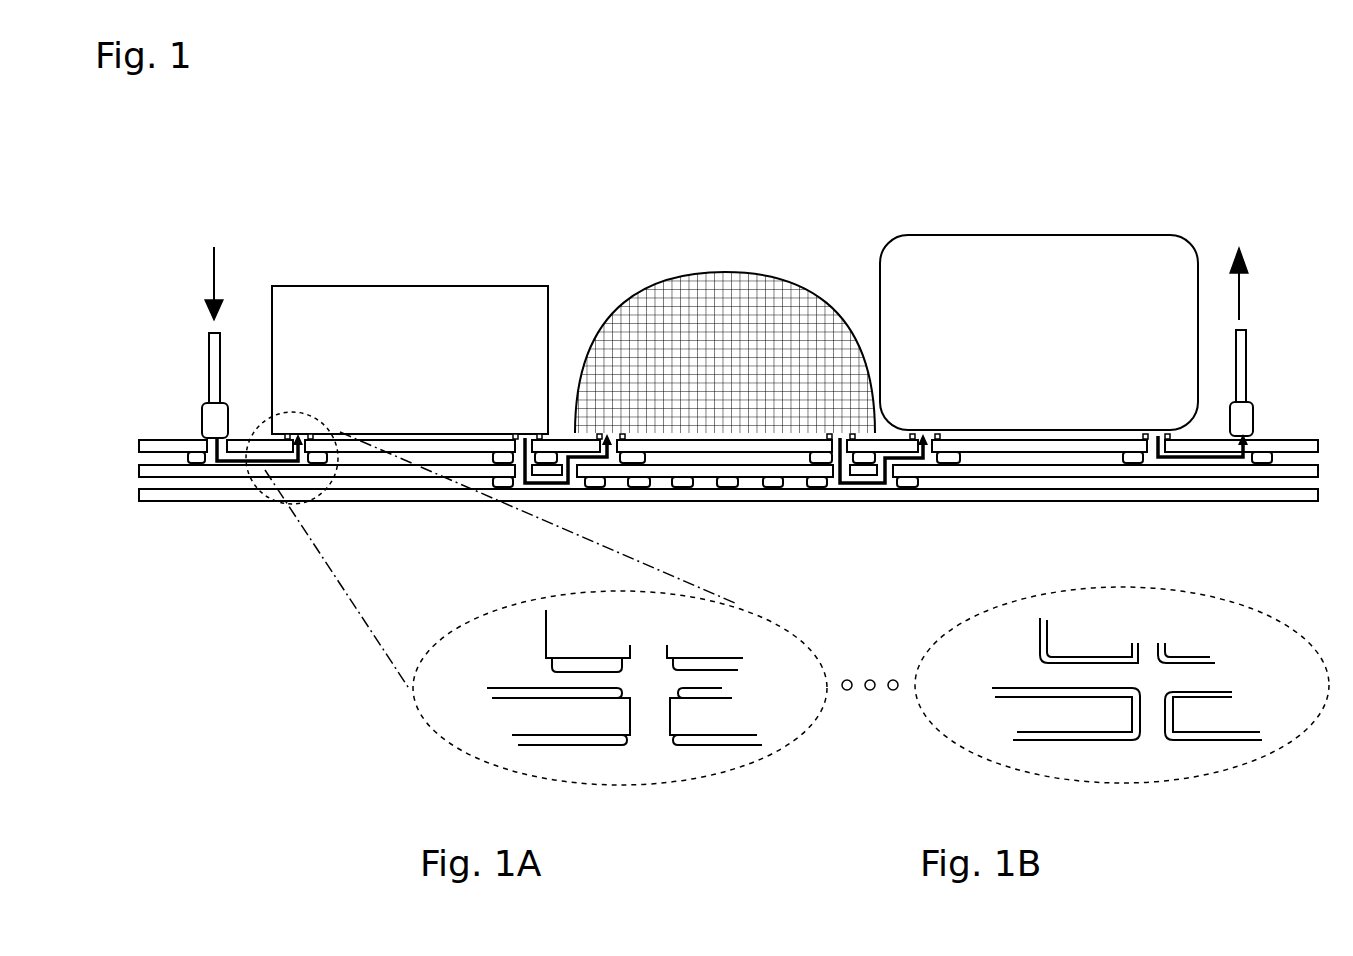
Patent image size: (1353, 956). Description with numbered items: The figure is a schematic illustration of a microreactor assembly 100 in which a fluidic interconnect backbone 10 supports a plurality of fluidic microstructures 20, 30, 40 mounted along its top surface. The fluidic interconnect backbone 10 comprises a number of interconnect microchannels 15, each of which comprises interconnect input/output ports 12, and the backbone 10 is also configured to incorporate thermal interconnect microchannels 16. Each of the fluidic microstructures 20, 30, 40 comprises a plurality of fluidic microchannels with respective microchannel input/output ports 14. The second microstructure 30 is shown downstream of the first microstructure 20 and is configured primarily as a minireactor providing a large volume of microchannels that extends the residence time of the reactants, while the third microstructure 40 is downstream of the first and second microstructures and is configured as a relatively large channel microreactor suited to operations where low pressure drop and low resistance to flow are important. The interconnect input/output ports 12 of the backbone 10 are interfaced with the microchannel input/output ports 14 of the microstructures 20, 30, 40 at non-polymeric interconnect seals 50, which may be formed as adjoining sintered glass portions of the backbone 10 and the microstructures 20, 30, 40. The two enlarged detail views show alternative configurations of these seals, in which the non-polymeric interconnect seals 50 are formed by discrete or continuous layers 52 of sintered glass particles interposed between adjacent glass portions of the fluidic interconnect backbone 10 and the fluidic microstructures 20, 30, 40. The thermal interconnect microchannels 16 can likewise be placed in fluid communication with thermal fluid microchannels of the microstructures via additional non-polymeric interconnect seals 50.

In FIG. 1, the microreactor assembly 100 is at (1196, 168).
In FIG. 1, the fluidic interconnect backbone 10 is at (132, 437).
In FIG. 1, the interconnect input/output ports 12 is at (302, 468).
In FIG. 1, the microchannel input/output ports 14 is at (296, 433).
In FIG. 1, the interconnect microchannels 15 is at (232, 470).
In FIG. 1, the thermal interconnect microchannels 16 is at (665, 490).
In FIG. 1, the first microstructure 20 is at (396, 320).
In FIG. 1, the second microstructure 30 is at (711, 312).
In FIG. 1, the third microstructure 40 is at (1028, 270).
In FIG. 1, the non-polymeric interconnect seals 50 is at (318, 434).
In FIG. 1A, the layers of sintered glass particles 52 is at (562, 658).
In FIG. 1B, the layers of sintered glass particles 52 is at (1057, 657).